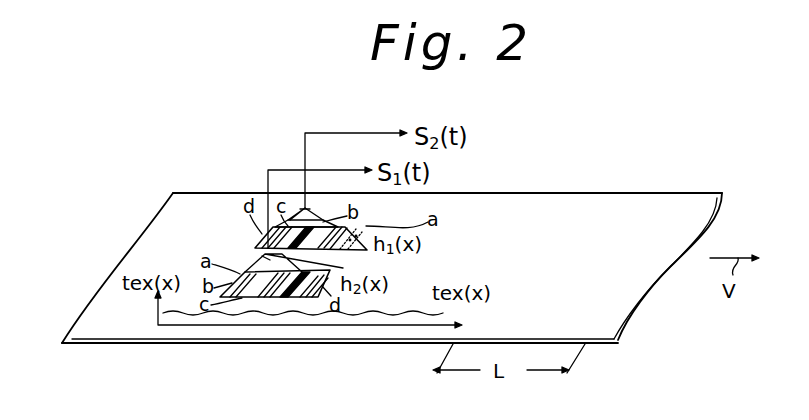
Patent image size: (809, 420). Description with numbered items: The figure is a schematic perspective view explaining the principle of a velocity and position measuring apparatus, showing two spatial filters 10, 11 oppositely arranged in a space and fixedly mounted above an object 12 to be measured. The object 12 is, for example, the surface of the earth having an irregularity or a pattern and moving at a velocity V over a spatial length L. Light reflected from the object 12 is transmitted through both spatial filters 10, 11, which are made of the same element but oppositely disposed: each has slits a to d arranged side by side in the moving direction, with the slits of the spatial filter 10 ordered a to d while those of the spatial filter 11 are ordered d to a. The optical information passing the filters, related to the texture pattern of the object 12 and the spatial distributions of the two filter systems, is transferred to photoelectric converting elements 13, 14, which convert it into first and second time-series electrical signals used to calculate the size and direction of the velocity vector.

The spatial filter 10 is at (345, 233).
The spatial filter 11 is at (332, 273).
The object 12 is at (551, 203).
The photoelectric converting element 13 is at (312, 206).
The photoelectric converting element 14 is at (275, 262).